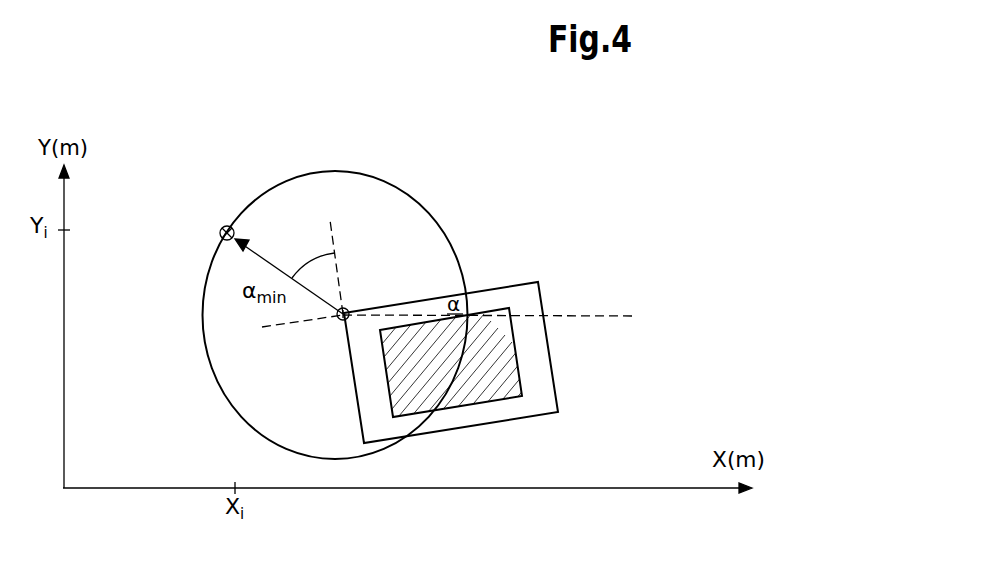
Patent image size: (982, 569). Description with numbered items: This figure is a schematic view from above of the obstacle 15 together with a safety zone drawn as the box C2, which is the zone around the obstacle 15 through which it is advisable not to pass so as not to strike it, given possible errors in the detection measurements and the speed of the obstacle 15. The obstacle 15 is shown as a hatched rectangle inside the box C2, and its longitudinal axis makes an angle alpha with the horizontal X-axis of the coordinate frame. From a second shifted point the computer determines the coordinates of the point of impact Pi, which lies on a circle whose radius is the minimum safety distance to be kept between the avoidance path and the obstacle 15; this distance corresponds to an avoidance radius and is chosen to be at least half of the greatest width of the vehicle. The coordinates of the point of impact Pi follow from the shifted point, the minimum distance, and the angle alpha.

The obstacle 15 is at (503, 379).
The box C2 is at (543, 298).
The point of impact Pi is at (222, 211).